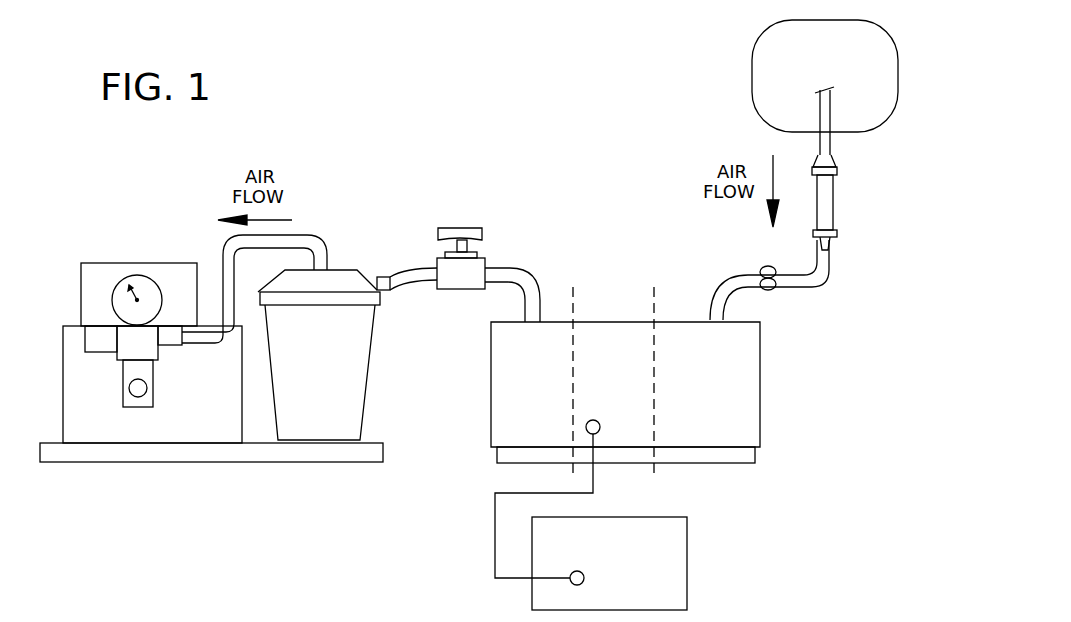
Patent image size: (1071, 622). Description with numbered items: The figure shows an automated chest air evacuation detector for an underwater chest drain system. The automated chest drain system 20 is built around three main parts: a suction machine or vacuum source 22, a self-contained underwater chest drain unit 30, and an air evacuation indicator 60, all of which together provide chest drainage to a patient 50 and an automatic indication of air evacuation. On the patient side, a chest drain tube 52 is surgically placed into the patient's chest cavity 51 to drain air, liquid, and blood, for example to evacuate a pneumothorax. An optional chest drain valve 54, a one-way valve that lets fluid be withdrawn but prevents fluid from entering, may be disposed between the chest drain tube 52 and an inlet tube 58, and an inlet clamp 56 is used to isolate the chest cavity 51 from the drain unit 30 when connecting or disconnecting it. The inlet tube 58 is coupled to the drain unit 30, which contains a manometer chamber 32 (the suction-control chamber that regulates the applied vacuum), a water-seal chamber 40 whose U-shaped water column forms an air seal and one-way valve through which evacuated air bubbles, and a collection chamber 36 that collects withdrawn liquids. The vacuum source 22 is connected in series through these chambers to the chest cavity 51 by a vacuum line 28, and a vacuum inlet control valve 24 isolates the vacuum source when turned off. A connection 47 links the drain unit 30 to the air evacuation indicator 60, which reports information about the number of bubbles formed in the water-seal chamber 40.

The automated chest drain system 20 is at (348, 172).
The vacuum source 22 is at (173, 250).
The vacuum inlet control valve 24 is at (463, 228).
The vacuum line 28 is at (512, 272).
The self-contained underwater chest drain unit 30 is at (630, 262).
The manometer chamber 32 is at (507, 402).
The collection chamber 36 is at (750, 400).
The water-seal chamber 40 is at (623, 342).
The input wire 47 is at (495, 510).
The patient 50 is at (730, 75).
The chest cavity 51 is at (765, 50).
The chest drain tube 52 is at (825, 118).
The chest drain valve 54 is at (830, 198).
The inlet clamp 56 is at (765, 267).
The inlet tube 58 is at (737, 277).
The air evacuation indicator 60 is at (688, 558).